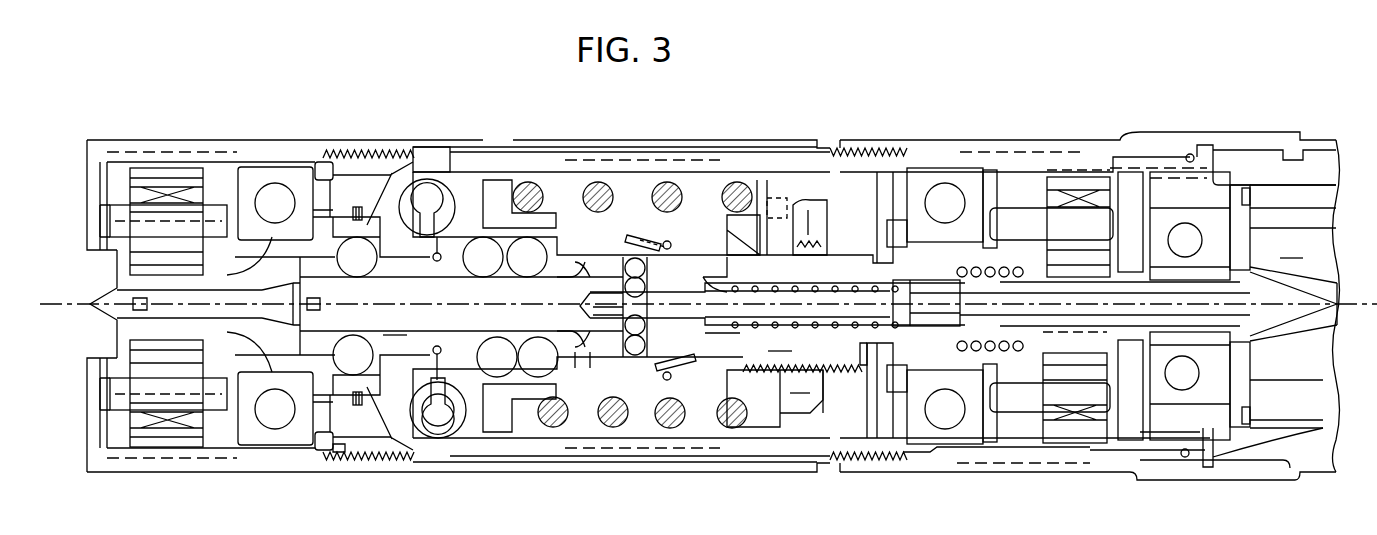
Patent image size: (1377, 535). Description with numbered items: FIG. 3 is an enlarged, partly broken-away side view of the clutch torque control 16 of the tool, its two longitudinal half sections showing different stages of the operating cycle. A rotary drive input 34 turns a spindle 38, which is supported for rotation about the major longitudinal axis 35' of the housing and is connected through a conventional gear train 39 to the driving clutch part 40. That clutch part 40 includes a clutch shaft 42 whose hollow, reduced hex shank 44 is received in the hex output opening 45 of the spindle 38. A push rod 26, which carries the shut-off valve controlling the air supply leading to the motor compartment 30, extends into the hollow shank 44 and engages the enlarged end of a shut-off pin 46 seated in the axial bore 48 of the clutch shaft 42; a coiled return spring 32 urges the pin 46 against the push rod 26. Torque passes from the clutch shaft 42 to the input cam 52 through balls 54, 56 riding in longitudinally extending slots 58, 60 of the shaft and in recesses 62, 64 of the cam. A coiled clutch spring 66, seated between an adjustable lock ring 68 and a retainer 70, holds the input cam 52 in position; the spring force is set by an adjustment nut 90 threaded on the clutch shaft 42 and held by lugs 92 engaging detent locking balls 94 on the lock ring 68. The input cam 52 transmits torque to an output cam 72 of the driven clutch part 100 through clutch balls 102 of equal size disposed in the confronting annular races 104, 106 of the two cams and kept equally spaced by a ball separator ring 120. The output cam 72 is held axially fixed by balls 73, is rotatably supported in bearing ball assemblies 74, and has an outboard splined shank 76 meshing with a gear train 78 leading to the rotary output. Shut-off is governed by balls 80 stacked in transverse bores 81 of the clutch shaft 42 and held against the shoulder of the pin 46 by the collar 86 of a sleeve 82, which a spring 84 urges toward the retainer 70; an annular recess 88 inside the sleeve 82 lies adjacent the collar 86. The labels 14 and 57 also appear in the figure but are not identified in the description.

The housing 14 is at (713, 306).
The clutch torque control 16 is at (594, 222).
The push rod 26 is at (986, 338).
The motor compartment 30 is at (1210, 250).
The coiled return spring 32 is at (857, 278).
The rotary drive input 34 is at (950, 188).
The major longitudinal axis 35' is at (1355, 293).
The spindle 38 is at (910, 243).
The gear train 39 is at (1096, 180).
The driving clutch part 40 is at (857, 372).
The clutch shaft 42 is at (546, 306).
The hex shank 44 is at (960, 266).
The hex output opening 45 is at (905, 268).
The shut-off pin 46 is at (700, 324).
The axial bore 48 is at (708, 283).
The input cam 52 is at (468, 197).
The ball 54 is at (533, 250).
The ball 56 is at (537, 378).
The plate 57 is at (985, 215).
The longitudinally extending slot 58 is at (567, 284).
The longitudinally extending slot 60 is at (567, 333).
The recess 62 is at (452, 262).
The recess 64 is at (517, 372).
The coiled clutch spring 66 is at (740, 186).
The adjustable lock ring 68 is at (762, 427).
The retainer 70 is at (500, 188).
The output cam 72 is at (355, 207).
The balls 73 is at (297, 443).
The bearing ball assemblies 74 is at (252, 167).
The outboard splined shank 76 is at (170, 337).
The gear train 78 is at (158, 190).
The balls 80 is at (636, 364).
The transverse bores 81 is at (648, 282).
The sleeve 82 is at (627, 238).
The spring 84 is at (670, 243).
The collar 86 is at (672, 375).
The annular recess 88 is at (600, 257).
The adjustment nut 90 is at (817, 215).
The lugs 92 is at (797, 405).
The detent locking balls 94 is at (790, 200).
The driven clutch part 100 is at (248, 275).
The clutch ball 102 is at (447, 393).
The annular race 104 is at (448, 420).
The annular race 106 is at (377, 458).
The ball separator ring 120 is at (420, 200).